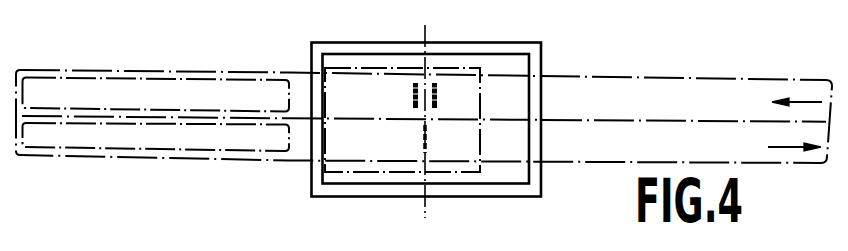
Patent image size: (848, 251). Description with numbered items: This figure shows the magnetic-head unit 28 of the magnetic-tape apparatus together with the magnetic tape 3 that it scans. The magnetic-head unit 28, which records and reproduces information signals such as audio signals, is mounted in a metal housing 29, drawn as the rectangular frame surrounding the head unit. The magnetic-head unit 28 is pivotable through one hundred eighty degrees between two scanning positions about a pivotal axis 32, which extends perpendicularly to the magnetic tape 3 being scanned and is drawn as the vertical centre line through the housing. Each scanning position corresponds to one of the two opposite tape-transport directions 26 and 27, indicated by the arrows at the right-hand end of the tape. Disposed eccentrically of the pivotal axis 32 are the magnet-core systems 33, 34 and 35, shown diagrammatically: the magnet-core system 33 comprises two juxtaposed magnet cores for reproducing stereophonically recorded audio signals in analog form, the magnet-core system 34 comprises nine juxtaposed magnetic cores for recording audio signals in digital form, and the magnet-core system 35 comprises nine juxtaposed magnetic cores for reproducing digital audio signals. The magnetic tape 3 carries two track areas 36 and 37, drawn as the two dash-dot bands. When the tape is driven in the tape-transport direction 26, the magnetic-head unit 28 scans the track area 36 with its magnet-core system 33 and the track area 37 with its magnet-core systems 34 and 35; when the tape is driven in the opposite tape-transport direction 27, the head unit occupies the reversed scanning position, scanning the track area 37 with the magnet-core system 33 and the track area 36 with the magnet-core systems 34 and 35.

The magnetic tape 3 is at (32, 152).
The tape-transport direction 26 is at (780, 148).
The tape-transport direction 27 is at (802, 100).
The magnetic-head unit 28 is at (395, 172).
The metal housing 29 is at (541, 68).
The pivotal axis 32 is at (425, 119).
The magnet-core system 33 is at (434, 150).
The magnet-core system 34 is at (409, 99).
The magnet-core system 35 is at (441, 99).
The track area 36 is at (129, 147).
The track area 37 is at (147, 80).